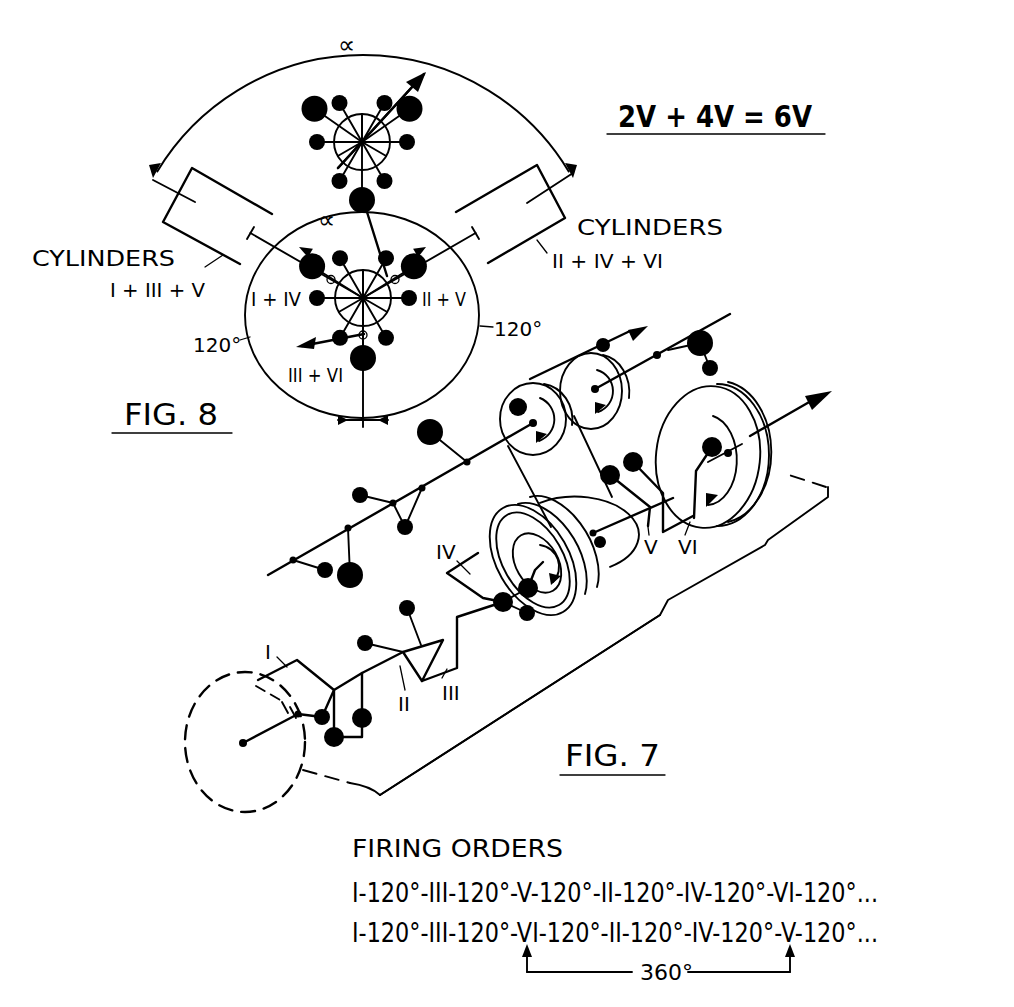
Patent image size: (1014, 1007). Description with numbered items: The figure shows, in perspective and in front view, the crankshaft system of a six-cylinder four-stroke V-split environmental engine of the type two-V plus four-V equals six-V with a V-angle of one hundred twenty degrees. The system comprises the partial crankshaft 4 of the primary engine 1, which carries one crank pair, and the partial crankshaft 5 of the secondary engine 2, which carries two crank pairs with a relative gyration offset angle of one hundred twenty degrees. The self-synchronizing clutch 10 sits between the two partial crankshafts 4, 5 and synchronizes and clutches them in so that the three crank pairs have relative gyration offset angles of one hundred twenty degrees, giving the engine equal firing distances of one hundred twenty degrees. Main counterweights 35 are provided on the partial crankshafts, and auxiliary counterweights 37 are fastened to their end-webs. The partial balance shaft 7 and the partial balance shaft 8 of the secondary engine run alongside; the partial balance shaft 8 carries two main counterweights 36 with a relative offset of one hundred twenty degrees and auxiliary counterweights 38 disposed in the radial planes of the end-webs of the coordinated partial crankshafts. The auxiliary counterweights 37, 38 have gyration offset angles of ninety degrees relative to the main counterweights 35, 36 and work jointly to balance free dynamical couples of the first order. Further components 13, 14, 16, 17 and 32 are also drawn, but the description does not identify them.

In FIG. 7, the primary engine 1 is at (565, 634).
In FIG. 7, the secondary engine 2 is at (538, 682).
In FIG. 8, the partial crankshaft 4 is at (393, 322).
In FIG. 7, the partial crankshaft 4 is at (709, 467).
In FIG. 7, the partial crankshaft 5 is at (275, 730).
In FIG. 8, the partial balance shaft 7 is at (337, 157).
In FIG. 7, the partial balance shaft 7 is at (673, 343).
In FIG. 7, the partial balance shaft 8 is at (332, 541).
In FIG. 7, the self-synchronizing clutch 10 is at (522, 500).
In FIG. 8, the camshaft drive 13 is at (424, 72).
In FIG. 7, the camshaft drive 13 is at (613, 344).
In FIG. 8, the camshaft pulley 14 is at (381, 121).
In FIG. 7, the camshaft pulley 14 is at (525, 385).
In FIG. 7, the flywheel 16 is at (740, 407).
In FIG. 7, the clutch 17 is at (188, 717).
In FIG. 7, the output shaft 32 is at (790, 423).
In FIG. 8, the main counterweights 35 is at (300, 273).
In FIG. 7, the main counterweights 35 is at (614, 460).
In FIG. 8, the main counterweights 36 is at (316, 97).
In FIG. 7, the main counterweights 36 is at (346, 590).
In FIG. 8, the auxiliary counterweights 37 is at (378, 256).
In FIG. 7, the auxiliary counterweights 37 is at (320, 710).
In FIG. 8, the auxiliary counterweights 38 is at (347, 98).
In FIG. 7, the auxiliary counterweights 38 is at (317, 575).